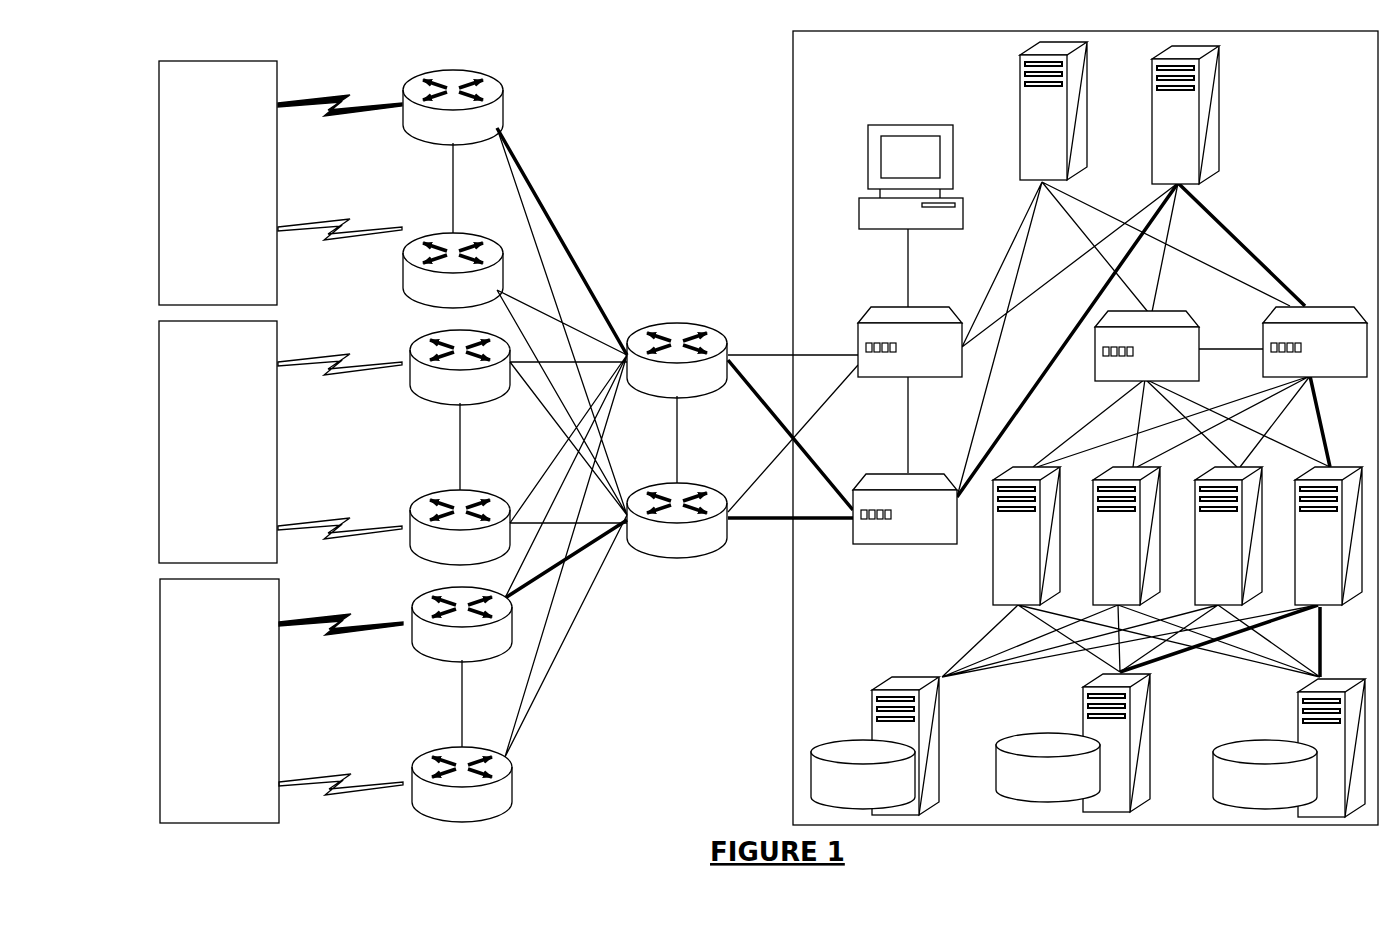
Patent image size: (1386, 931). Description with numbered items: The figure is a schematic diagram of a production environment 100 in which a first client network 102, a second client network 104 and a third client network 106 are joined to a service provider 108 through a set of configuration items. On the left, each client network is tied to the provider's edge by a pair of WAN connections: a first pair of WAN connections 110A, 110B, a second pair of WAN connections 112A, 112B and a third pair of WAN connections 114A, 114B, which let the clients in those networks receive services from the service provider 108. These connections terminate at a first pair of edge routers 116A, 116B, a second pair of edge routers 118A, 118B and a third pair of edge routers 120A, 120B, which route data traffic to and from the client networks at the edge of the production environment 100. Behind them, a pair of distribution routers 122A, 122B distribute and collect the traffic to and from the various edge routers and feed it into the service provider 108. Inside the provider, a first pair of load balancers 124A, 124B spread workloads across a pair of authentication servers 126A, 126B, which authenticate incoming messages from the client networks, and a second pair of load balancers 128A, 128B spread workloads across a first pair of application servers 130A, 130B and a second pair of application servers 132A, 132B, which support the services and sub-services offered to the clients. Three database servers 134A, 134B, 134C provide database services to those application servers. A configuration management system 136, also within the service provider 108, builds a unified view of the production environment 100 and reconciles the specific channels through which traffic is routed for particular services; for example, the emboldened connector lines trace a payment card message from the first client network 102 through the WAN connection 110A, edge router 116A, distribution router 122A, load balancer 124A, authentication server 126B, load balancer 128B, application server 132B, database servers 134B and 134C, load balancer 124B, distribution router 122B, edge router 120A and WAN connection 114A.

The production environment 100 is at (697, 101).
The first client network 102 is at (218, 183).
The second client network 104 is at (218, 442).
The third client network 106 is at (219, 701).
The service provider 108 is at (790, 685).
The first WAN connection 110A is at (341, 116).
The first WAN connection 110B is at (332, 253).
The second WAN connection 112A is at (340, 378).
The second WAN connection 112B is at (335, 515).
The third WAN connection 114A is at (340, 637).
The third WAN connection 114B is at (335, 773).
The first edge router 116A is at (507, 106).
The first edge router 116B is at (442, 235).
The second edge router 118A is at (452, 404).
The second edge router 118B is at (486, 487).
The third edge router 120A is at (455, 661).
The third edge router 120B is at (514, 777).
The distribution router 122A is at (672, 321).
The distribution router 122B is at (675, 557).
The first load balancer 124A is at (878, 307).
The first load balancer 124B is at (880, 473).
The authentication server 126A is at (1015, 80).
The authentication server 126B is at (1225, 108).
The second load balancer 128A is at (1203, 341).
The second load balancer 128B is at (1326, 306).
The first application server 130A is at (1026, 536).
The first application server 130B is at (1126, 536).
The second application server 132A is at (1228, 536).
The second application server 132B is at (1328, 536).
The database server 134A is at (906, 674).
The database server 134B is at (1080, 712).
The database server 134C is at (1296, 715).
The configuration management system 136 is at (886, 122).